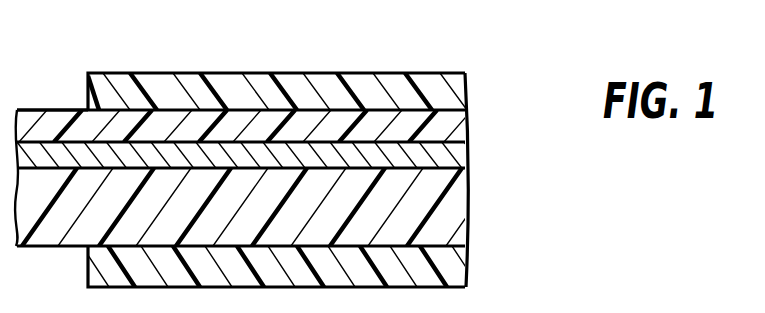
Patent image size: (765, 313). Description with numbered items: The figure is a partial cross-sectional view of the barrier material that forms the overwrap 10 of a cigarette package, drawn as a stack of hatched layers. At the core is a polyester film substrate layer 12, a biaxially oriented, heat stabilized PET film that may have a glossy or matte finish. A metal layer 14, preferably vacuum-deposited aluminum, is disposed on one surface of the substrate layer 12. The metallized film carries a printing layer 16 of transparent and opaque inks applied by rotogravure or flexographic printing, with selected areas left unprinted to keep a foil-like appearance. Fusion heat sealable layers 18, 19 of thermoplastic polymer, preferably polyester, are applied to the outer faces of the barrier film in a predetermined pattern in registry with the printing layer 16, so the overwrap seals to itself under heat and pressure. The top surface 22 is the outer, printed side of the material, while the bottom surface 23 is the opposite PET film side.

The overwrap 10 is at (518, 183).
The polyester film substrate layer 12 is at (447, 218).
The metal layer 14 is at (443, 162).
The printing layer 16 is at (438, 132).
The fusion heat sealable layer 18 is at (231, 73).
The fusion heat sealable layer 19 is at (443, 265).
The top surface 22 is at (47, 110).
The bottom surface 23 is at (50, 248).